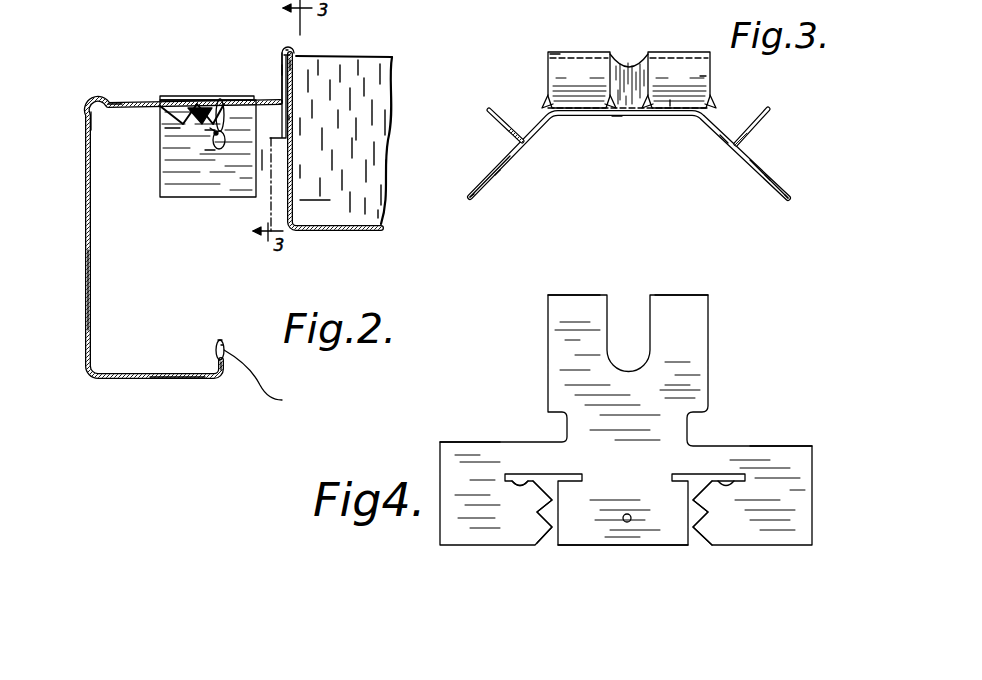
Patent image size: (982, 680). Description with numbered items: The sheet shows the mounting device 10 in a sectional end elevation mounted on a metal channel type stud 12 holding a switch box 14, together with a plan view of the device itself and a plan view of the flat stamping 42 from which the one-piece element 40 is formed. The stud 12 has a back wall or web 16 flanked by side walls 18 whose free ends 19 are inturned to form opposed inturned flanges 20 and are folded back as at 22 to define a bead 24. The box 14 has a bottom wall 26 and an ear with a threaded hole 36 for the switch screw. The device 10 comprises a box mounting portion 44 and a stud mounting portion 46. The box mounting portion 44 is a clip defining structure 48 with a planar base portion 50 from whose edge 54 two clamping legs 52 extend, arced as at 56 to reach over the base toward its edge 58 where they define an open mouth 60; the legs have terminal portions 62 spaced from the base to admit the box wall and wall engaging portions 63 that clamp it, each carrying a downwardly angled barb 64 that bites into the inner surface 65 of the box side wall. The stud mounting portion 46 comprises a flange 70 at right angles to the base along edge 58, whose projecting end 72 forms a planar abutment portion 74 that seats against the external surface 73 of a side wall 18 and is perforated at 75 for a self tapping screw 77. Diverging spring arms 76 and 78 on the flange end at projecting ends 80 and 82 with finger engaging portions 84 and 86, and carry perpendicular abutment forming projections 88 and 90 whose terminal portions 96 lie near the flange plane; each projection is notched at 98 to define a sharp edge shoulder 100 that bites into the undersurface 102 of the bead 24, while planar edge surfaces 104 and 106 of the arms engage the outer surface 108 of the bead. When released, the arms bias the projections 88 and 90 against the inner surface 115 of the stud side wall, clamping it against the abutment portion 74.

In FIG. 3, the mounting device 10 is at (633, 133).
In FIG. 2, the metal channel type stud 12 is at (157, 188).
In FIG. 2, the switch box 14 is at (338, 132).
In FIG. 2, the back wall or web 16 is at (85, 290).
In FIG. 2, the side walls 18 is at (133, 0).
In FIG. 2, the free ends 19 is at (224, 345).
In FIG. 2, the inturned flanges 20 is at (228, 372).
In FIG. 2, the rolled or folded back portion 22 is at (220, 338).
In FIG. 2, the bead 24 is at (215, 358).
In FIG. 2, the bottom wall 26 is at (381, 220).
In FIG. 3, the threaded hole 36 is at (445, 0).
In FIG. 3, the one-piece element 40 is at (725, 140).
In FIG. 4, the stamping 42 is at (718, 352).
In FIG. 2, the box mounting portion 44 is at (283, 46).
In FIG. 3, the box mounting portion 44 is at (545, 68).
In FIG. 2, the stud mounting portion 46 is at (208, 182).
In FIG. 3, the clip defining structure 48 is at (677, 48).
In FIG. 2, the base portion 50 is at (281, 53).
In FIG. 3, the base portion 50 is at (632, 70).
In FIG. 4, the base portion 50 is at (690, 392).
In FIG. 3, the clamping legs 52 is at (697, 76).
In FIG. 4, the clamping legs 52 is at (580, 307).
In FIG. 3, the edge of base 54 is at (625, 60).
In FIG. 2, the arc 56 is at (295, 85).
In FIG. 3, the arc 56 is at (560, 52).
In FIG. 3, the edge of base 58 is at (617, 117).
In FIG. 2, the open mouth 60 is at (294, 113).
In FIG. 2, the terminal portions 62 is at (300, 108).
In FIG. 3, the terminal portions 62 is at (673, 105).
In FIG. 2, the wall engaging portions 63 is at (281, 65).
In FIG. 2, the barb 64 is at (331, 47).
In FIG. 3, the barb 64 is at (550, 100).
In FIG. 2, the inner surface of box side wall 65 is at (295, 200).
In FIG. 2, the flange 70 is at (281, 98).
In FIG. 2, the projecting end of flange 72 is at (160, 96).
In FIG. 4, the projecting end of flange 72 is at (612, 525).
In FIG. 2, the external surface of channel side wall 73 is at (115, 102).
In FIG. 2, the planar abutment portion 74 is at (175, 103).
In FIG. 4, the perforation 75 is at (631, 515).
In FIG. 3, the spring arm 76 is at (752, 160).
In FIG. 4, the spring arm 76 is at (752, 446).
In FIG. 2, the self tapping screw 77 is at (172, 128).
In FIG. 2, the spring arm 78 is at (262, 150).
In FIG. 3, the spring arm 78 is at (510, 150).
In FIG. 4, the spring arm 78 is at (487, 441).
In FIG. 3, the projecting end of arm 80 is at (790, 203).
In FIG. 2, the projecting end of arm 82 is at (212, 190).
In FIG. 3, the projecting end of arm 82 is at (478, 200).
In FIG. 3, the finger engaging portion 84 is at (770, 178).
In FIG. 3, the finger engaging portion 86 is at (498, 178).
In FIG. 3, the abutment forming projection 88 is at (763, 125).
In FIG. 4, the abutment forming projection 88 is at (712, 545).
In FIG. 2, the abutment forming projection 90 is at (215, 130).
In FIG. 3, the abutment forming projection 90 is at (497, 121).
In FIG. 4, the abutment forming projection 90 is at (537, 543).
In FIG. 2, the terminal portions 96 is at (172, 105).
In FIG. 2, the notch 98 is at (213, 150).
In FIG. 2, the sharp edge shoulder 100 is at (213, 128).
In FIG. 2, the undersurface of channel bead 102 is at (218, 108).
In FIG. 4, the planar edge surface 104 is at (520, 478).
In FIG. 4, the planar edge surface 106 is at (697, 478).
In FIG. 2, the outer surface of stud bead 108 is at (240, 135).
In FIG. 2, the inner surface of stud side wall 115 is at (118, 110).